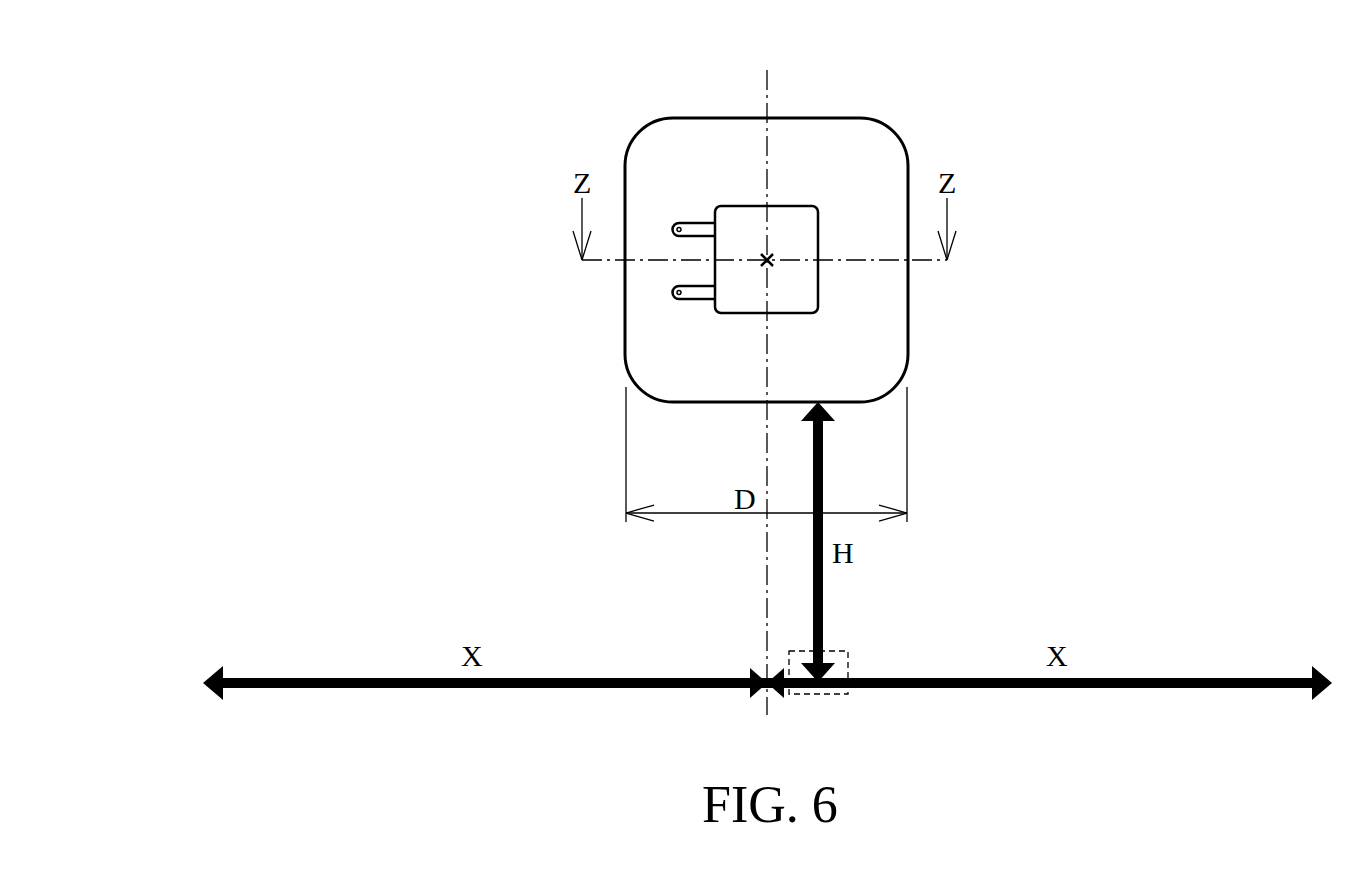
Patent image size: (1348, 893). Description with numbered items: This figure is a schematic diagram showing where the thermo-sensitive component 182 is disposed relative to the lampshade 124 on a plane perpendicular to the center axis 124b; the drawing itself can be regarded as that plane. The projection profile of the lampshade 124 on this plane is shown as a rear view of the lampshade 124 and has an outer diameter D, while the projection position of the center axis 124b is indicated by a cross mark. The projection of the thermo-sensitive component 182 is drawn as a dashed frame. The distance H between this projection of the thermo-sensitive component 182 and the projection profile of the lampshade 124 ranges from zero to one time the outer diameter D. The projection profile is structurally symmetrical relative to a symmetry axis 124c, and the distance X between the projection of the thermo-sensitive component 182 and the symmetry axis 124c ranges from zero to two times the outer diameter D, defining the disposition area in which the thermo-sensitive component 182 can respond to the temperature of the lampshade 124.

The lampshade 124 is at (893, 337).
The center axis 124b is at (774, 253).
The symmetry axis 124c is at (768, 69).
The thermo-sensitive component 182 is at (847, 651).